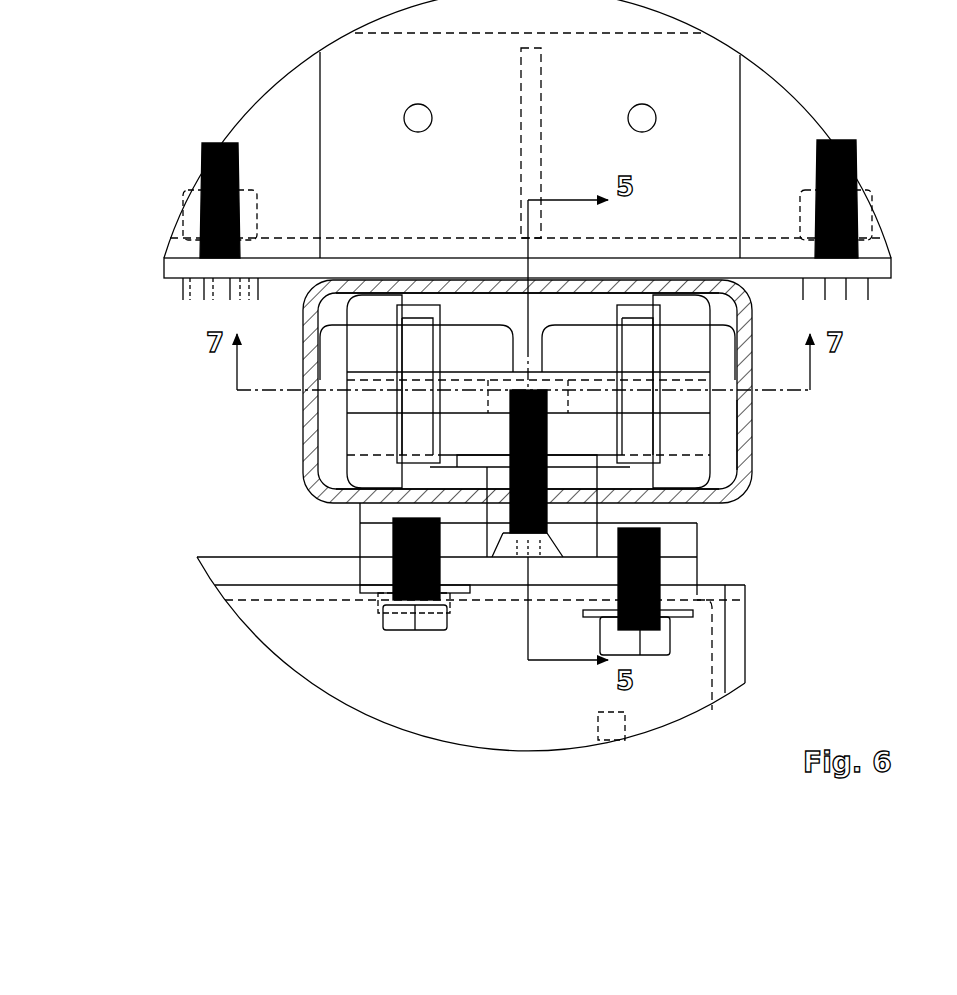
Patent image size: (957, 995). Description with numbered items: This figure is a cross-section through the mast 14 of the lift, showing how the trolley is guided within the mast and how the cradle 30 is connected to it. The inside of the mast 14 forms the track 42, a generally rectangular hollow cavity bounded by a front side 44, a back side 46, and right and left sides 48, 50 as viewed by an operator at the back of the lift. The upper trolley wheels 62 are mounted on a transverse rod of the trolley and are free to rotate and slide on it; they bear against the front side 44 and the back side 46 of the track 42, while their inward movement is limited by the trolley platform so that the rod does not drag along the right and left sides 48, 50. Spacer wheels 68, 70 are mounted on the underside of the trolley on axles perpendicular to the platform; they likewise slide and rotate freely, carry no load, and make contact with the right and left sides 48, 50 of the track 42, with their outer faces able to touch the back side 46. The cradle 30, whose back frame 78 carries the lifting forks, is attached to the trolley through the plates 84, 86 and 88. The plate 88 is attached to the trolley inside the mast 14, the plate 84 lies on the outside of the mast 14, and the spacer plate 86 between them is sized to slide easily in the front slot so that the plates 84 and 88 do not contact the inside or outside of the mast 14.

The mast 14 is at (757, 418).
The cradle 30 is at (752, 668).
The track 42 is at (727, 313).
The front side 44 is at (718, 493).
The back side 46 is at (636, 288).
The right side 48 is at (313, 440).
The left side 50 is at (746, 447).
The upper trolley wheels 62 is at (340, 423).
The spacer wheel 68 is at (316, 326).
The spacer wheel 70 is at (740, 388).
The back frame 78 is at (228, 553).
The plate 84 is at (490, 466).
The spacer plate 86 is at (605, 509).
The plate 88 is at (450, 437).